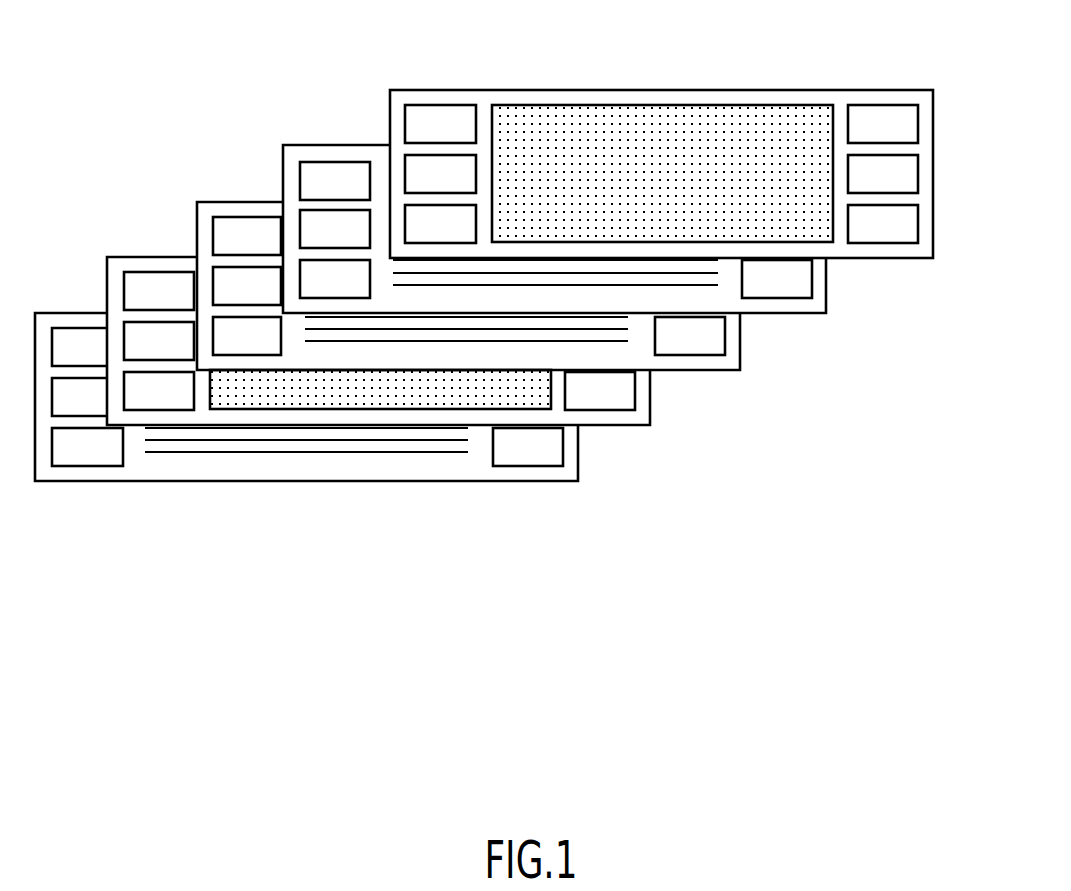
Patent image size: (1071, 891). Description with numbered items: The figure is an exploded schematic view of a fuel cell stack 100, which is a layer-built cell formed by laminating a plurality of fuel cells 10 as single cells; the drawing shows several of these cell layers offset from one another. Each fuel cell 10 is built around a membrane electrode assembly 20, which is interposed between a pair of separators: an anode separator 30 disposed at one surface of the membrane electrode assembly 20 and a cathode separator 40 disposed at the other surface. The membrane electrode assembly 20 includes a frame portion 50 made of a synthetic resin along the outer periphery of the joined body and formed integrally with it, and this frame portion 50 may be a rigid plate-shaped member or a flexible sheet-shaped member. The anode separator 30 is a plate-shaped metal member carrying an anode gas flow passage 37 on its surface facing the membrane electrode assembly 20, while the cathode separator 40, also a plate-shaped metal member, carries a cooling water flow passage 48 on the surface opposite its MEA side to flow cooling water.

The fuel cell stack 100 is at (217, 123).
The fuel cell 10 is at (18, 168).
The anode separator 30 is at (68, 320).
The membrane electrode assembly 20 is at (257, 388).
The cathode separator 40 is at (202, 227).
The frame portion 50 is at (202, 413).
The anode gas flow passage 37 is at (282, 447).
The cooling water flow passage 48 is at (415, 333).